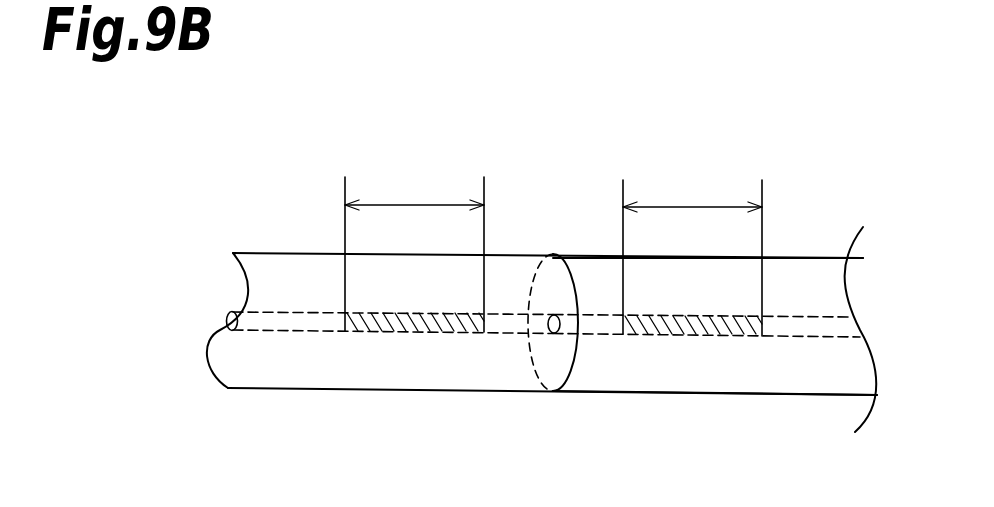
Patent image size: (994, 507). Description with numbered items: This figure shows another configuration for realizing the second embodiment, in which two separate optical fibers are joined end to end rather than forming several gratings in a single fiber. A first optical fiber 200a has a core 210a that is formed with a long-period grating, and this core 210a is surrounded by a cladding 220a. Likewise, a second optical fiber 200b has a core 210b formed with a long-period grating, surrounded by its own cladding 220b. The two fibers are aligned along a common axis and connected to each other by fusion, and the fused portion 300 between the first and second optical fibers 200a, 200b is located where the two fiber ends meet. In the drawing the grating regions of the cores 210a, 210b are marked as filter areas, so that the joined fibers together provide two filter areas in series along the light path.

The first optical fiber 200a is at (510, 250).
The second optical fiber 200b is at (803, 253).
The core 210a is at (292, 262).
The core 210b is at (605, 270).
The cladding 220a is at (245, 320).
The cladding 220b is at (600, 323).
The fused portion 300 is at (552, 397).